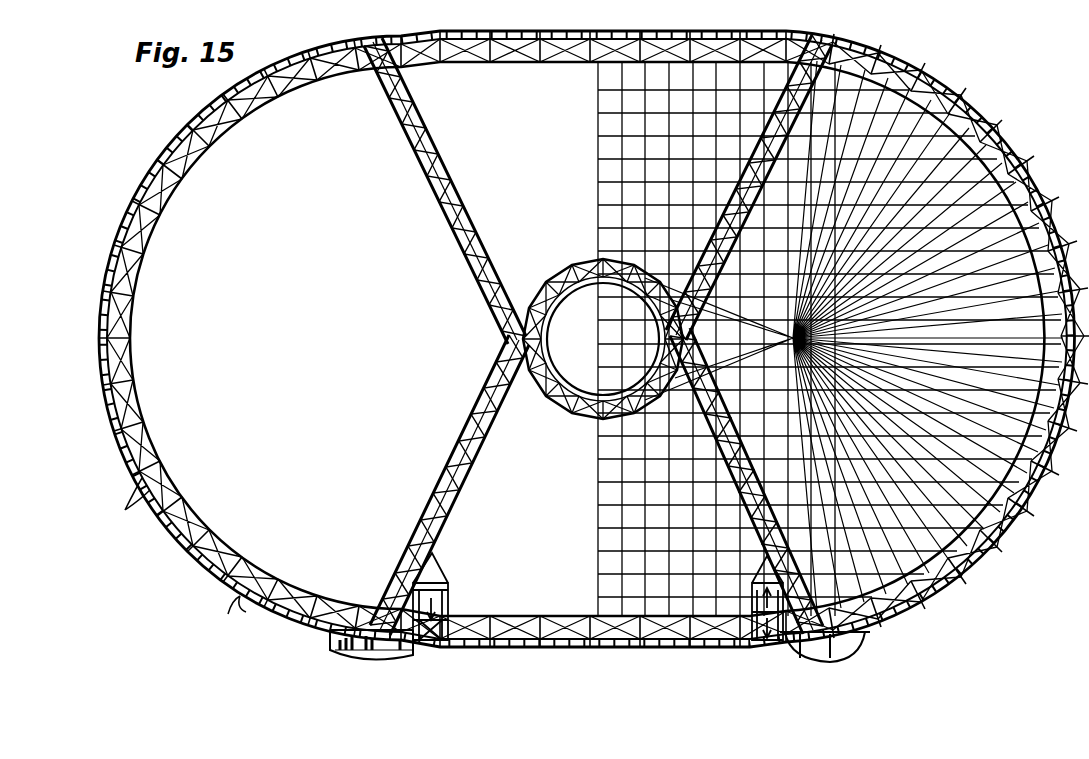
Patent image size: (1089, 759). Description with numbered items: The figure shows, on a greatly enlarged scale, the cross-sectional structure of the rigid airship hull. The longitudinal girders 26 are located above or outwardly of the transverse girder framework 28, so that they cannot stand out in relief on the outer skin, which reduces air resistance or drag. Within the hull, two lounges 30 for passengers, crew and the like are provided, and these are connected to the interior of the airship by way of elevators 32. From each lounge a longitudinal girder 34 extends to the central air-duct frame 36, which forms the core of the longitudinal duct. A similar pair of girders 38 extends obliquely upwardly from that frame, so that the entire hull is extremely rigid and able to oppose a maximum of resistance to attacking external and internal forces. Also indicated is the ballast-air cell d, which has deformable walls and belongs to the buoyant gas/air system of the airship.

The longitudinal girders 26 is at (220, 580).
The transverse girder framework 28 is at (584, 339).
The lounges 30 is at (393, 667).
The elevators 32 is at (448, 600).
The longitudinal girder 34 is at (492, 385).
The central air-duct frame 36 is at (555, 282).
The girders 38 is at (462, 238).
The ballast-air cell d is at (755, 440).